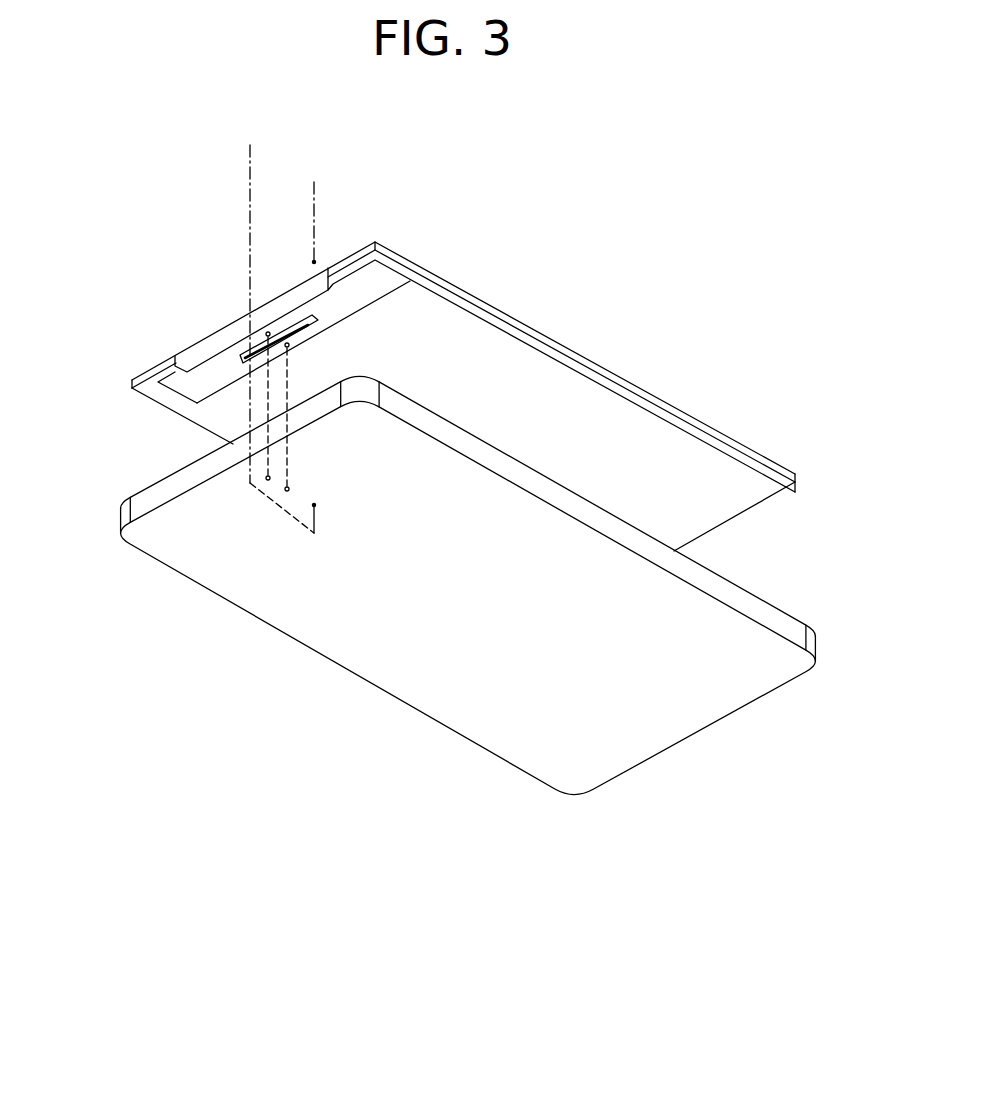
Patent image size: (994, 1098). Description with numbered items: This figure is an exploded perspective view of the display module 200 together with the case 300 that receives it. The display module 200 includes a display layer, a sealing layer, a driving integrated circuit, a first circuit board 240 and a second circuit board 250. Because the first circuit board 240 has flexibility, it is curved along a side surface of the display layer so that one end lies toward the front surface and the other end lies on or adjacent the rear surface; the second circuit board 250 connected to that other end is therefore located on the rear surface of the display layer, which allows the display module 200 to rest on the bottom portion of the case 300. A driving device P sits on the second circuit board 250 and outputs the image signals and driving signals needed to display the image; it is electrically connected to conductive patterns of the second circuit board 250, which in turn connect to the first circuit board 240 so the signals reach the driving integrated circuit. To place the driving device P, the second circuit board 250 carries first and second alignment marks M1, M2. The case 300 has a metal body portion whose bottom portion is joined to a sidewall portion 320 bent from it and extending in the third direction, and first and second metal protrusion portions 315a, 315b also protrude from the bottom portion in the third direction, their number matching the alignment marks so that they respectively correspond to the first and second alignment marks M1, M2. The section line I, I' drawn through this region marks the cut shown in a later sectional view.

The display module 200 is at (798, 483).
The case 300 is at (815, 648).
The sidewall portion 320 is at (120, 518).
The first circuit board 240 is at (190, 363).
The second circuit board 250 is at (167, 390).
The driving device P is at (235, 367).
The first alignment mark M1 is at (280, 330).
The second alignment mark M2 is at (305, 318).
The first metal protrusion portion 315a is at (269, 476).
The second metal protrusion portion 315b is at (289, 489).
The section line I is at (283, 324).
The section line I' is at (336, 207).